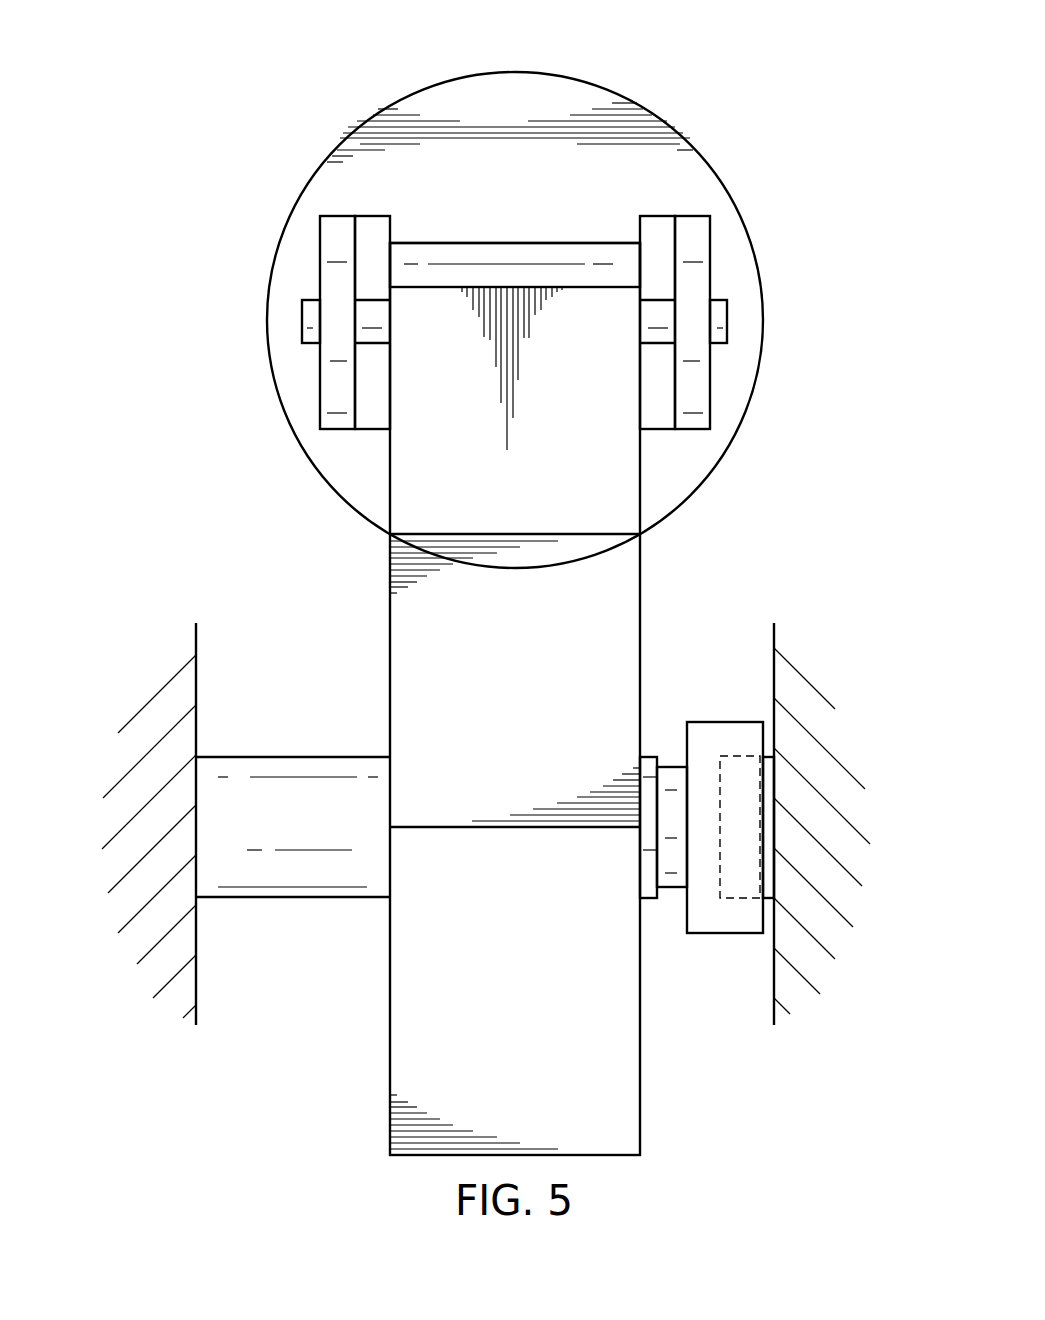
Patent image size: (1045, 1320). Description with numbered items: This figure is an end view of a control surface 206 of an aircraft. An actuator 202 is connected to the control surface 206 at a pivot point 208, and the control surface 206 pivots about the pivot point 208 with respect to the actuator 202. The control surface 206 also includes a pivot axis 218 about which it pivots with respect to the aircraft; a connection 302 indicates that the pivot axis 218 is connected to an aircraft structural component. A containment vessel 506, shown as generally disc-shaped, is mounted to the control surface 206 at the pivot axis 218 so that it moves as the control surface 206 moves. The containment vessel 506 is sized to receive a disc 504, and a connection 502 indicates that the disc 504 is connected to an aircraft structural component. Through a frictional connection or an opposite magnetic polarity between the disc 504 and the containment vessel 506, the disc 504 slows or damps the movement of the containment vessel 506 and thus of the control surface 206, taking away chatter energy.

The actuator 202 is at (465, 74).
The control surface 206 is at (537, 695).
The pivot point 208 is at (723, 300).
The pivot axis 218 is at (288, 899).
The connection 302 is at (103, 873).
The connection 502 is at (865, 858).
The disc 504 is at (767, 756).
The containment vessel 506 is at (715, 936).